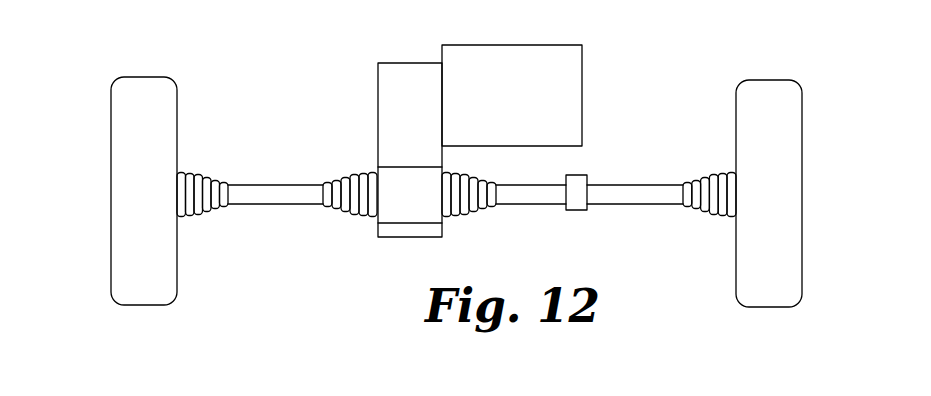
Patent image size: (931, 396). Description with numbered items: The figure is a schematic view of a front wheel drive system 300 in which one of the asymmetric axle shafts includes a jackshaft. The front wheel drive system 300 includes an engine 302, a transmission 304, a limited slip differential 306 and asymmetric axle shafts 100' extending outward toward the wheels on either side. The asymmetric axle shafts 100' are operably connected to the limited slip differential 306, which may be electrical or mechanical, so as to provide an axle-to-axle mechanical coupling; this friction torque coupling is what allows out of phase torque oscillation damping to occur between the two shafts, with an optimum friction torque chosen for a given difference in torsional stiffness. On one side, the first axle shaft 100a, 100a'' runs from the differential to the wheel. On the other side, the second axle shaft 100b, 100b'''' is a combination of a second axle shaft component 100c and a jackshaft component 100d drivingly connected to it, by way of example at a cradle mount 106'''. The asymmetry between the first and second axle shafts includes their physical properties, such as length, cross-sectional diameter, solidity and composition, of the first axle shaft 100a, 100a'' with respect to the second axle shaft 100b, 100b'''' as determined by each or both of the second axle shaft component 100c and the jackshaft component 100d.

The front wheel drive system 300 is at (690, 50).
The engine 302 is at (583, 45).
The transmission 304 is at (378, 77).
The limited slip differential 306 is at (378, 168).
The asymmetric axle shafts 100' is at (425, 183).
The first axle shaft 100a is at (260, 159).
The first axle shaft 100a'' is at (275, 194).
The second axle shaft 100b is at (657, 182).
The second axle shaft 100b'''' is at (655, 141).
The second axle shaft component 100c is at (672, 181).
The jackshaft component 100d is at (569, 175).
The cradle mount 106''' is at (619, 161).